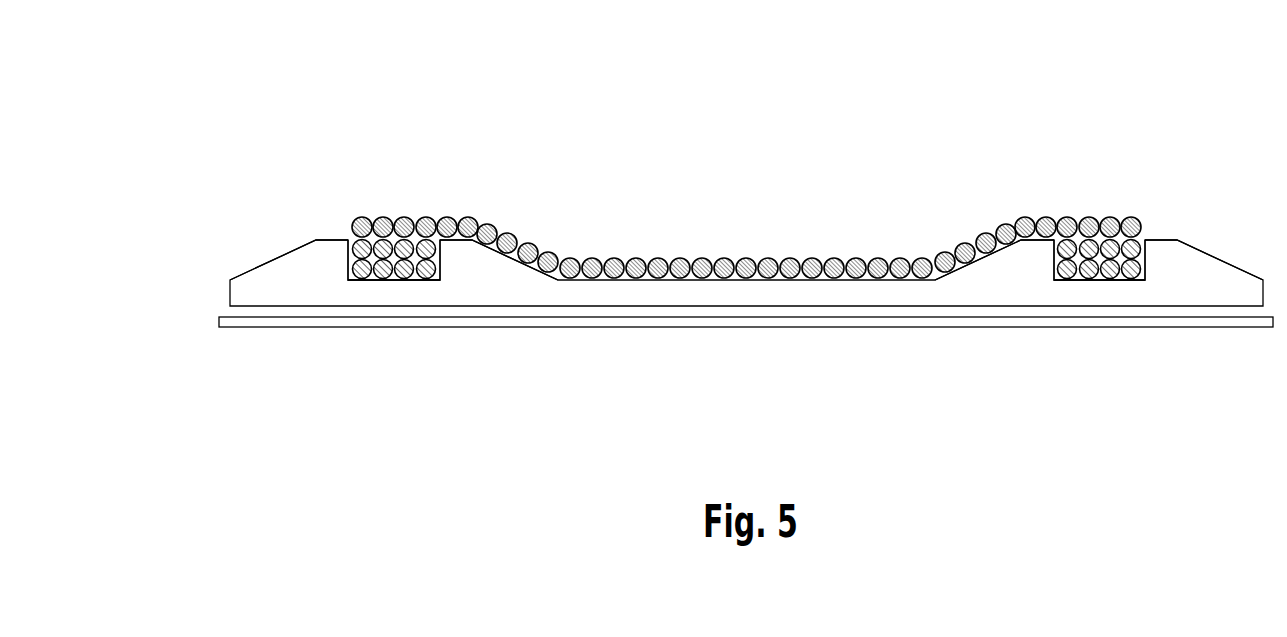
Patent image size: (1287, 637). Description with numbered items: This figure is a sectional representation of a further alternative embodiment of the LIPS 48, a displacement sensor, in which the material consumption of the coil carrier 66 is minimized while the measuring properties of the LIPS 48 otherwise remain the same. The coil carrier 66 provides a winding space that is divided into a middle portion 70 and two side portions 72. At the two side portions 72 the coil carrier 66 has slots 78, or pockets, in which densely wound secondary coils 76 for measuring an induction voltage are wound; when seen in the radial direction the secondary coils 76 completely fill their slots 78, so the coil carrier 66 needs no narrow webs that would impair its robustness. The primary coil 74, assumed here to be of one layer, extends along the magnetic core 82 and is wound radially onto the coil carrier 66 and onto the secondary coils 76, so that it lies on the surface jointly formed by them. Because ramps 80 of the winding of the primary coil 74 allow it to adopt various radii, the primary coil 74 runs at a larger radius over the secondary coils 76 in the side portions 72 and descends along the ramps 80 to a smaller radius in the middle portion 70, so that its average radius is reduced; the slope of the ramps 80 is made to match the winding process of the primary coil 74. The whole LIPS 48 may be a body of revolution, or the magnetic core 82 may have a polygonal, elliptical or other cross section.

The LIPS 48 is at (299, 129).
The coil carrier 66 is at (242, 291).
The middle portion 70 is at (637, 171).
The side portions 72 is at (378, 166).
The primary coil 74 is at (772, 266).
The secondary coils 76 is at (404, 248).
The slots 78 is at (353, 279).
The ramps 80 is at (328, 260).
The magnetic core 82 is at (473, 324).